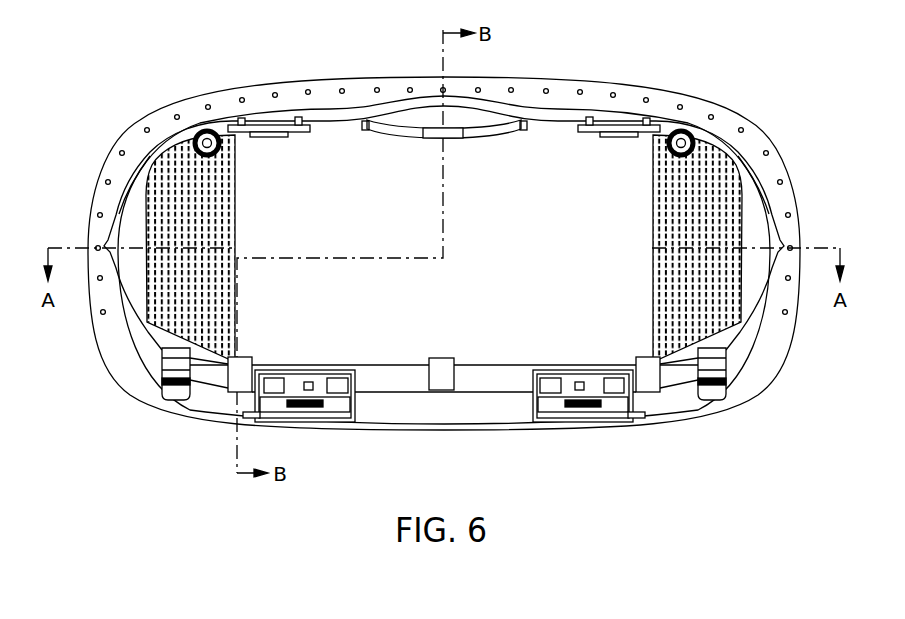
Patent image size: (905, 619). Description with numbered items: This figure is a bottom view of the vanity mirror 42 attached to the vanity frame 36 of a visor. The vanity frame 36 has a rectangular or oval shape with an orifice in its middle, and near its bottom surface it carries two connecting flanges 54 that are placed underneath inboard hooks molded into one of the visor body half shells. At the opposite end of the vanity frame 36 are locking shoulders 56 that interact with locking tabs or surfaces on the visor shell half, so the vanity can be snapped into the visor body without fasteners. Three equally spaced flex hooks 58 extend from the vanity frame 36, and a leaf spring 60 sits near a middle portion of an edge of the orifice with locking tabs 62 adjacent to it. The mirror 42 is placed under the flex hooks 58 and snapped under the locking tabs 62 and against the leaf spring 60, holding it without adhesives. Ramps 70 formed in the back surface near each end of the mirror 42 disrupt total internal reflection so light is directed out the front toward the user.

The vanity frame 36 is at (135, 130).
The vanity mirror 42 is at (557, 145).
The connecting flange 54 is at (177, 393).
The locking shoulder 56 is at (201, 130).
The flex hook 58 is at (233, 385).
The leaf spring 60 is at (487, 128).
The locking tab 62 is at (270, 127).
The ramp 70 is at (155, 332).